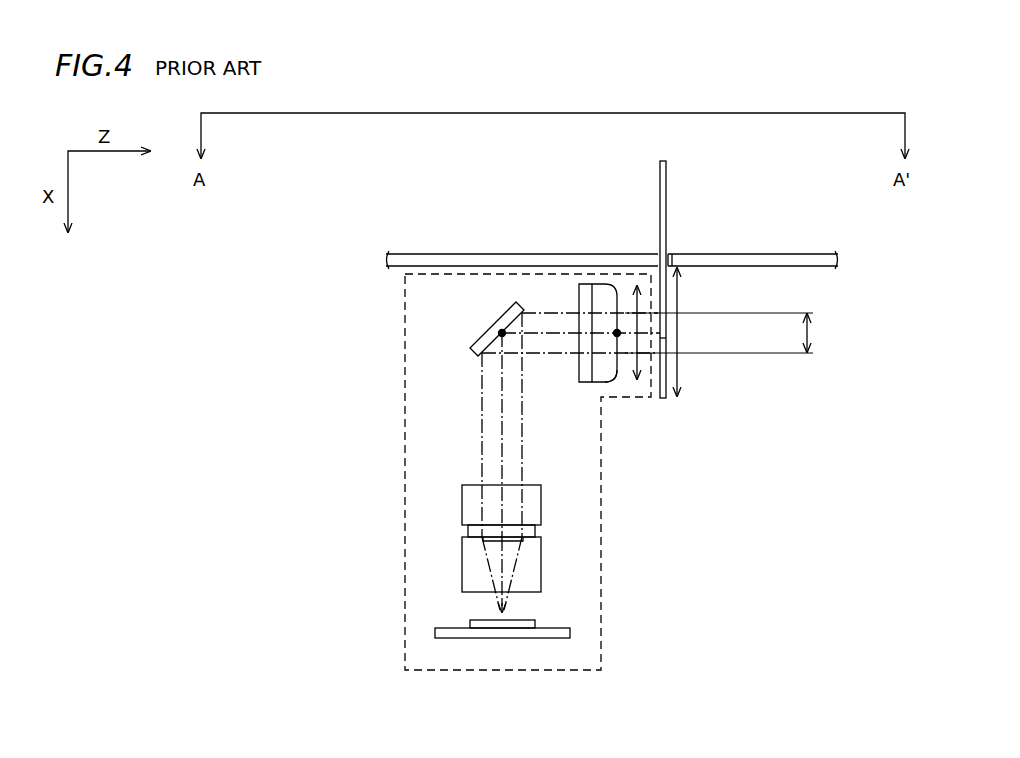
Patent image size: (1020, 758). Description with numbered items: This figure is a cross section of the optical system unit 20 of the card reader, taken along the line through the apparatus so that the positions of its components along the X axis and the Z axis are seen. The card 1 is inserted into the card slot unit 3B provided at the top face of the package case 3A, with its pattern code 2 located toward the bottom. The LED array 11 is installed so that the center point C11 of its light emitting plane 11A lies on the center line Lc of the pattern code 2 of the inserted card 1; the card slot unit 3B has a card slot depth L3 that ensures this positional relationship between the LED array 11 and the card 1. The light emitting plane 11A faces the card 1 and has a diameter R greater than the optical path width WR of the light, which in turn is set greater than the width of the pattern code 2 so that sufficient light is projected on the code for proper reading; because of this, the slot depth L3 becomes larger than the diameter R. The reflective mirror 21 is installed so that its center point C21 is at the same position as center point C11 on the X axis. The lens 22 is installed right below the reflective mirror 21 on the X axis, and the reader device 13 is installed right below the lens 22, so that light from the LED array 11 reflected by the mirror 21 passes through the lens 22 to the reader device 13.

The card 1 is at (660, 175).
The pattern code 2 is at (666, 338).
The package case 3A is at (766, 253).
The card slot unit 3B is at (668, 254).
The LED array 11 is at (597, 385).
The light emitting plane 11A is at (603, 383).
The reader device 13 is at (435, 633).
The optical system unit 20 is at (603, 560).
The reflective mirror 21 is at (476, 352).
The lens 22 is at (462, 563).
The center point of light emitting plane C11 is at (617, 333).
The center point of reflective mirror C21 is at (502, 333).
The diameter of light emitting plane R is at (637, 285).
The center line of pattern code Lc is at (665, 333).
The card slot depth L3 is at (679, 371).
The optical path width of light WR is at (734, 333).